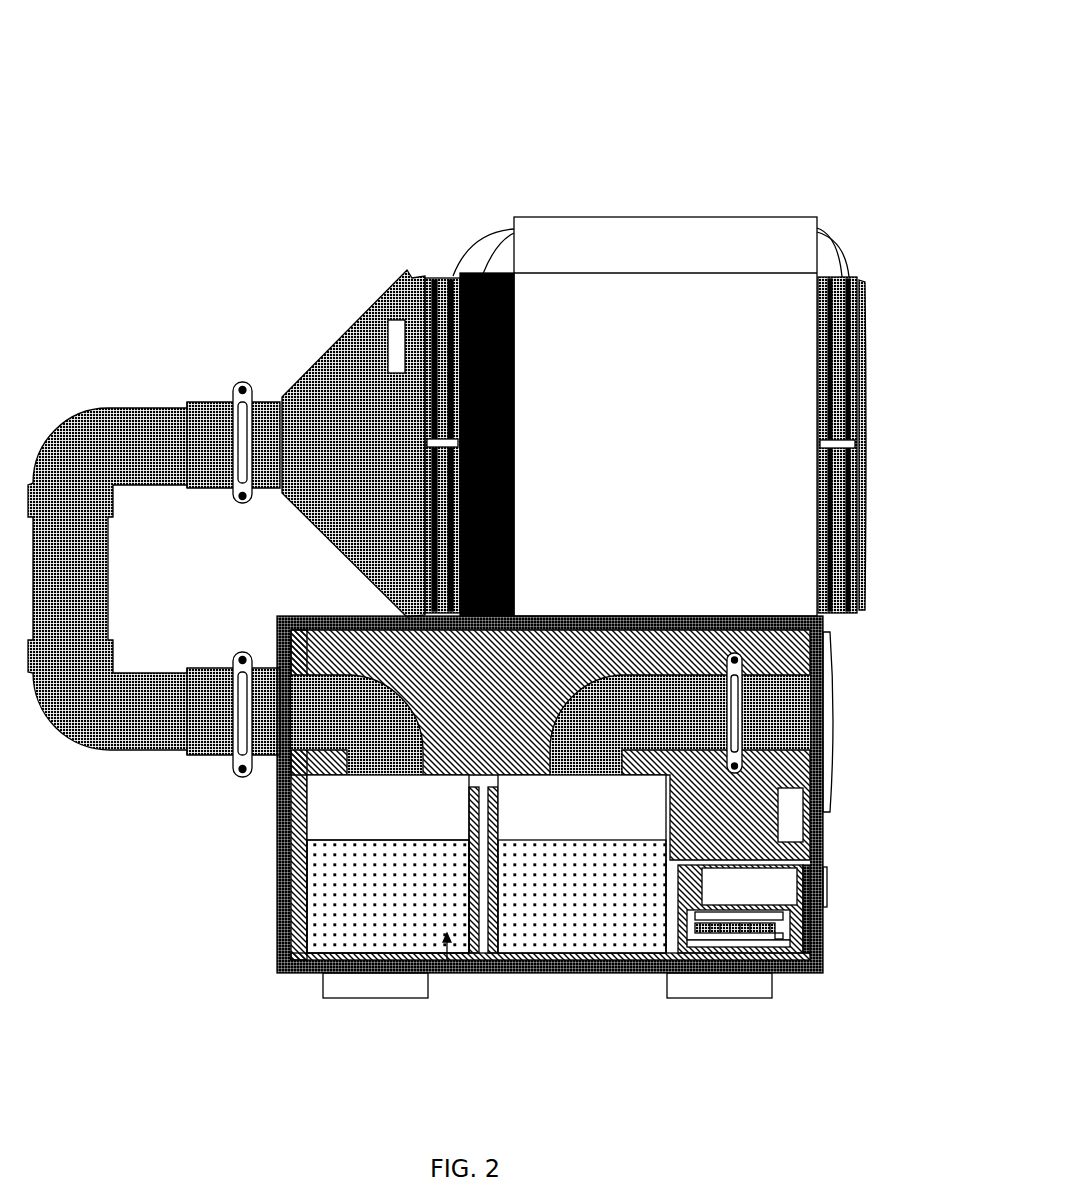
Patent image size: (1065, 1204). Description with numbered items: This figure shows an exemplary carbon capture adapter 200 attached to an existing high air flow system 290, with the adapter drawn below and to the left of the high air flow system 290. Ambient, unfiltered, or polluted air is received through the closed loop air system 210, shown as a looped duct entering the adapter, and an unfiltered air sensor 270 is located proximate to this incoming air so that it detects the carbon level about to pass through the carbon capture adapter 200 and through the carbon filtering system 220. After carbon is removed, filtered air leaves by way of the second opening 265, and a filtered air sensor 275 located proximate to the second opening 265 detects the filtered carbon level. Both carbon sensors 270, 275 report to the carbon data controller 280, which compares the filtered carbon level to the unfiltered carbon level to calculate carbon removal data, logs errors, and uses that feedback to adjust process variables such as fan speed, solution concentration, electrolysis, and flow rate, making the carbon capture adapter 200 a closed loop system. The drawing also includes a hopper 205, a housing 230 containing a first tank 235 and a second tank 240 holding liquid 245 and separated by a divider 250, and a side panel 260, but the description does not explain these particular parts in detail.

The carbon capture adapter 200 is at (25, 33).
The hopper 205 is at (316, 357).
The closed loop air system 210 is at (95, 397).
The carbon filtering system 220 is at (318, 634).
The housing 230 is at (268, 905).
The first tank 235 is at (336, 815).
The second tank 240 is at (622, 973).
The liquid 245 is at (463, 973).
The divider 250 is at (493, 972).
The side panel 260 is at (845, 688).
The second opening 265 is at (805, 732).
The unfiltered air sensor 270 is at (396, 308).
The filtered air sensor 275 is at (797, 825).
The carbon data controller 280 is at (800, 925).
The high air flow system 290 is at (768, 206).